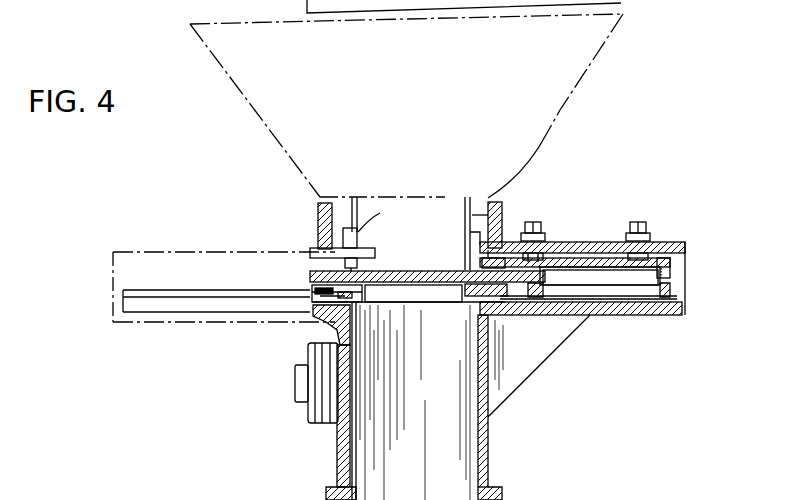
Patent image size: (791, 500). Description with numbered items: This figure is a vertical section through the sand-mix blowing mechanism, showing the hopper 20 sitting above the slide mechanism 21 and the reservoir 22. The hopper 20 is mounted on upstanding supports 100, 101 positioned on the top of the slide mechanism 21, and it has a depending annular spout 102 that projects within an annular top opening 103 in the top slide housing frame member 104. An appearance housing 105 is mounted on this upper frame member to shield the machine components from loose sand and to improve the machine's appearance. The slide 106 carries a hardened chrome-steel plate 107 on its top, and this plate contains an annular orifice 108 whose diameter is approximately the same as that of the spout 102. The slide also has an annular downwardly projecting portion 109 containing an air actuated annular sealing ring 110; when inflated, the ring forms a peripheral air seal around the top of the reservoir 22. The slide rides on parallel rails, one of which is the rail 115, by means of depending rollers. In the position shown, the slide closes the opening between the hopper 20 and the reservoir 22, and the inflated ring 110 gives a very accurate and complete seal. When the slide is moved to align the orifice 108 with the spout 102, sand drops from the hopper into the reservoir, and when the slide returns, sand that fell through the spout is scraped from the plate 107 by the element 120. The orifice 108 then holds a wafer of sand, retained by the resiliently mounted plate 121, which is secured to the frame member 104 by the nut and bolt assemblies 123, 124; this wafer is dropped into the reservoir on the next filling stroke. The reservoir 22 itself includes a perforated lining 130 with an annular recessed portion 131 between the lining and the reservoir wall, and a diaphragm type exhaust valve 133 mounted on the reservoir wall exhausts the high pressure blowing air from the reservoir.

The hopper 20 is at (552, 130).
The slide mechanism 21 is at (670, 230).
The reservoir 22 is at (490, 458).
The upstanding support 100 is at (292, 2).
The upstanding support 101 is at (502, 223).
The annular spout 102 is at (466, 238).
The annular top opening 103 is at (478, 240).
The top slide housing frame member 104 is at (579, 243).
The appearance housing 105 is at (156, 251).
The slide 106 is at (310, 277).
The chrome-steel plate 107 is at (313, 272).
The annular orifice 108 is at (603, 277).
The annular downwardly projecting portion 109 is at (513, 315).
The air actuated annular sealing ring 110 is at (333, 305).
The rail 115 is at (121, 0).
The scraper element 120 is at (467, 262).
The resiliently mounted plate 121 is at (670, 262).
The nut and bolt assembly 123 is at (542, 229).
The nut and bolt assembly 124 is at (641, 229).
The perforated lining 130 is at (357, 463).
The annular recessed portion 131 is at (348, 464).
The exhaust valve 133 is at (307, 412).